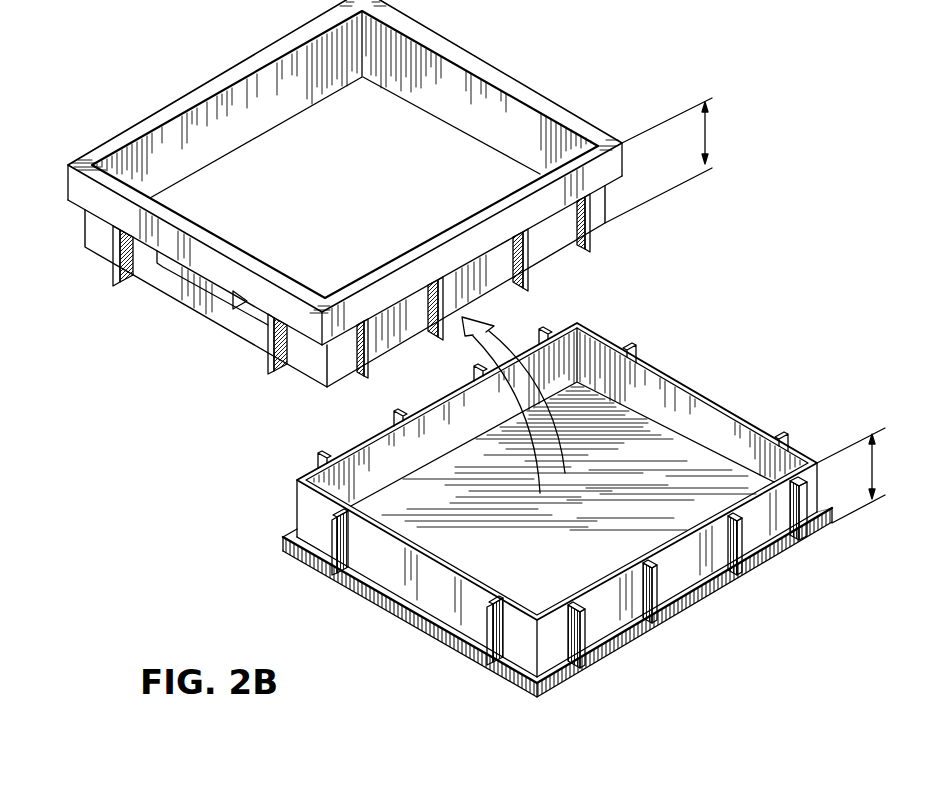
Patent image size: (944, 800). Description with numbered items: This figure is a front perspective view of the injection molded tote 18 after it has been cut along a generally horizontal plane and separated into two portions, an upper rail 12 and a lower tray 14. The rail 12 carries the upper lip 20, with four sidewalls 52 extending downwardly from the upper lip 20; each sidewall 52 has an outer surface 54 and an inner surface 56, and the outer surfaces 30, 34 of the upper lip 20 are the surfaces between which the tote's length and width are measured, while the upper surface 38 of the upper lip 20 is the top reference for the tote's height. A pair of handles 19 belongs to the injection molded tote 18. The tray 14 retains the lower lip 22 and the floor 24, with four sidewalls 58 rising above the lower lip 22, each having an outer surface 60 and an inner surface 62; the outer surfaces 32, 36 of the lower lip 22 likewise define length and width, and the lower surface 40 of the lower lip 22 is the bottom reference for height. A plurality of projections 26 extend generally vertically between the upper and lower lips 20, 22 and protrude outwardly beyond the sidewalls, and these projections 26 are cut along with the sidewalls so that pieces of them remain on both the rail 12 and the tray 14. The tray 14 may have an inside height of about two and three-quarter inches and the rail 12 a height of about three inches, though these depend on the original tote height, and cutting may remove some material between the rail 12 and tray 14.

The rail 12 is at (601, 106).
The tray 14 is at (773, 390).
The injection molded tote 18 is at (775, 103).
The handles 19 is at (170, 262).
The upper lip 20 is at (67, 164).
The lower lip 22 is at (282, 535).
The floor 24 is at (548, 539).
The projections 26 is at (118, 272).
The outer surface of upper lip 30 is at (459, 45).
The outer surface of lower lip 32 is at (311, 566).
The outer surface of upper lip 34 is at (192, 91).
The outer surface of lower lip 36 is at (820, 528).
The upper surface of upper lip 38 is at (533, 98).
The lower surface of lower lip 40 is at (692, 612).
The sidewalls of rail 52 is at (398, 95).
The outer surface of rail sidewall 54 is at (247, 321).
The inner surface of rail sidewall 56 is at (268, 98).
The sidewalls of tray 58 is at (700, 388).
The outer surface of tray sidewall 60 is at (443, 583).
The inner surface of tray sidewall 62 is at (428, 448).